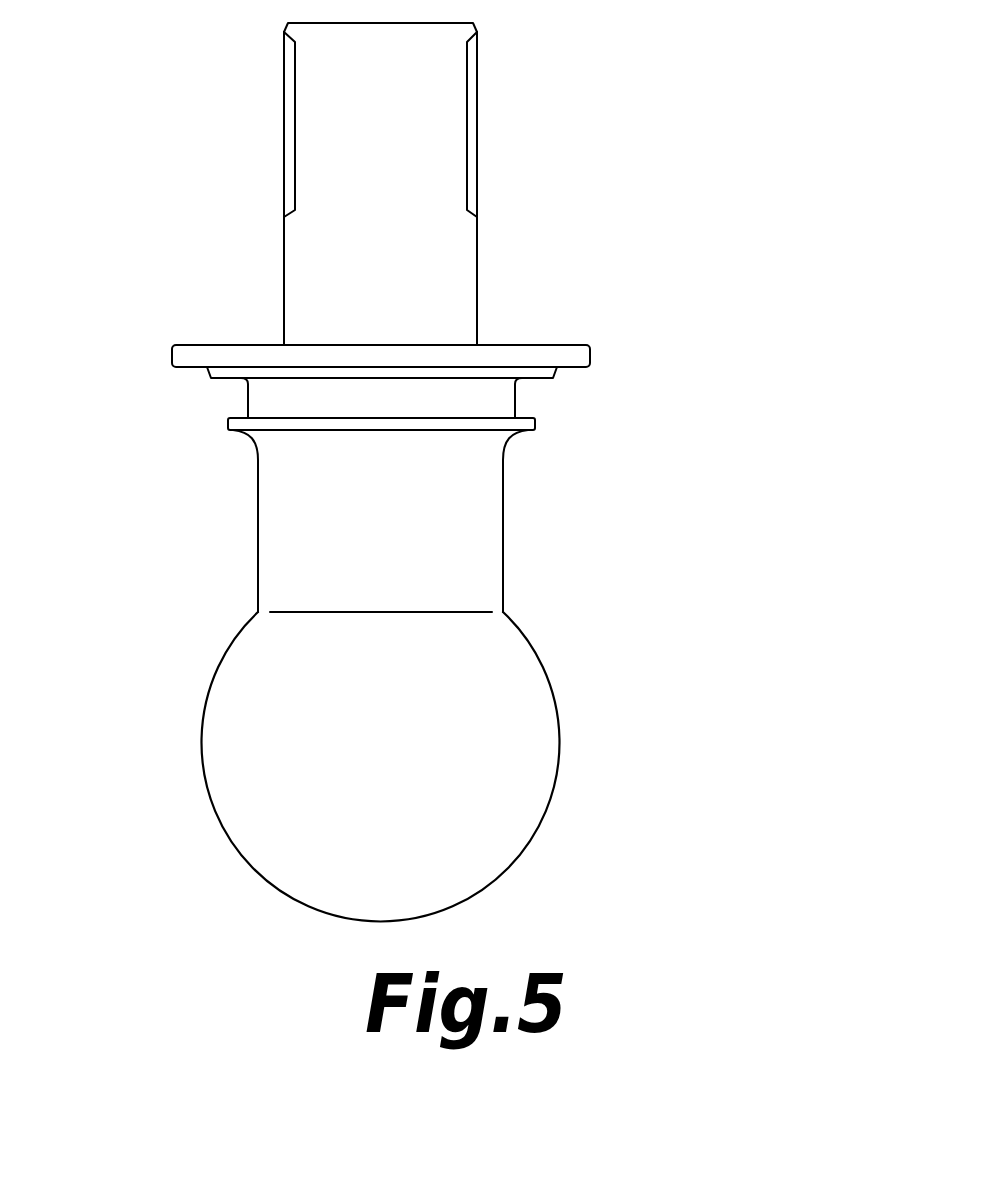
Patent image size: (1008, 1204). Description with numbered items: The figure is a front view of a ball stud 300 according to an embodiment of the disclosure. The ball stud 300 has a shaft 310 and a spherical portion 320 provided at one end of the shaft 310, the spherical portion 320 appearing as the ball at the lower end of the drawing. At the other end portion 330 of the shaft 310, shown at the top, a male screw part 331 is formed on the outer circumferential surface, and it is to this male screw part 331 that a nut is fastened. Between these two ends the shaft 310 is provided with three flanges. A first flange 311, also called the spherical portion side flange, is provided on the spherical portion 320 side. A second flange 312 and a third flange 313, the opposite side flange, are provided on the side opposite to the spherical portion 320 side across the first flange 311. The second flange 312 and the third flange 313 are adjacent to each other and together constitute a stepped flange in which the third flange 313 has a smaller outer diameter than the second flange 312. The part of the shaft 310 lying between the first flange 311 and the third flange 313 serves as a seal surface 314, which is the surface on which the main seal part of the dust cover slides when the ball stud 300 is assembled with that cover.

The ball stud 300 is at (742, 153).
The shaft 310 is at (593, 495).
The first flange 311 is at (227, 423).
The second flange 312 is at (173, 350).
The third flange 313 is at (210, 372).
The seal surface 314 is at (245, 400).
The spherical portion 320 is at (512, 748).
The other end portion 330 is at (323, 128).
The male screw part 331 is at (477, 63).